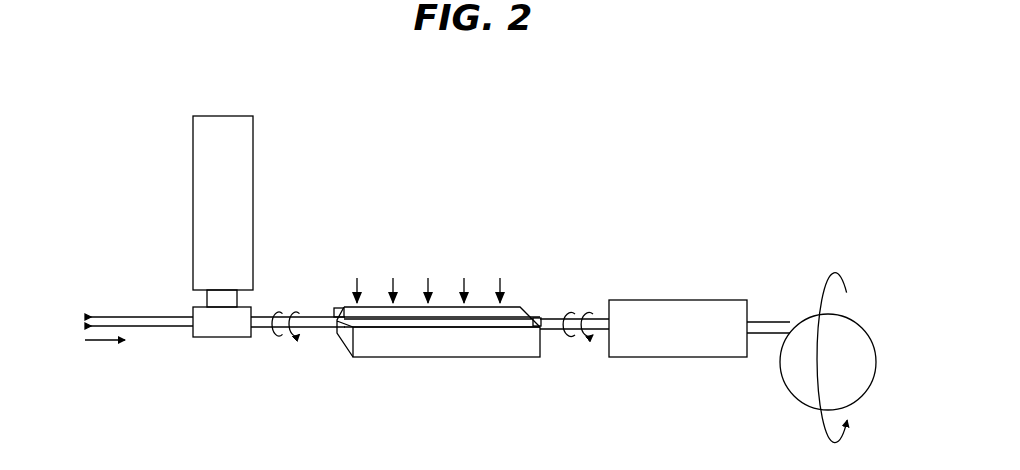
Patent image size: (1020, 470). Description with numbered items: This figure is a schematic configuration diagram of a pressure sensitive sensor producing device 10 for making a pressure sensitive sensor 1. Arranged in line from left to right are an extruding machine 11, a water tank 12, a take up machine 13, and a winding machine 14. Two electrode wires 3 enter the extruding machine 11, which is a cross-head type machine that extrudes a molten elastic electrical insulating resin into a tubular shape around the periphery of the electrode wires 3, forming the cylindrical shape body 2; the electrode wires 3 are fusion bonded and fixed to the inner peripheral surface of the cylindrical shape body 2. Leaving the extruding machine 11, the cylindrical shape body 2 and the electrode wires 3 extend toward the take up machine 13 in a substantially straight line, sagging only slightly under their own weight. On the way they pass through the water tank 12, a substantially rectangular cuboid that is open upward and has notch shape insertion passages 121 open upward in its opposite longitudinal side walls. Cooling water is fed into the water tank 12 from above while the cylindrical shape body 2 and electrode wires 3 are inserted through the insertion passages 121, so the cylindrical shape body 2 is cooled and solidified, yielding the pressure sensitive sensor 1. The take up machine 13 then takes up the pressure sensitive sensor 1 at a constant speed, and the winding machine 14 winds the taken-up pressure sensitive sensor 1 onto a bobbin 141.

The pressure sensitive sensor producing device 10 is at (698, 140).
The pressure sensitive sensor 1 is at (547, 333).
The cylindrical shape body 2 is at (313, 317).
The electrode wires 3 is at (123, 316).
The extruding machine 11 is at (258, 131).
The water tank 12 is at (518, 293).
The insertion passages 121 is at (343, 306).
The take up machine 13 is at (711, 297).
The winding machine 14 is at (855, 309).
The bobbin 141 is at (856, 392).